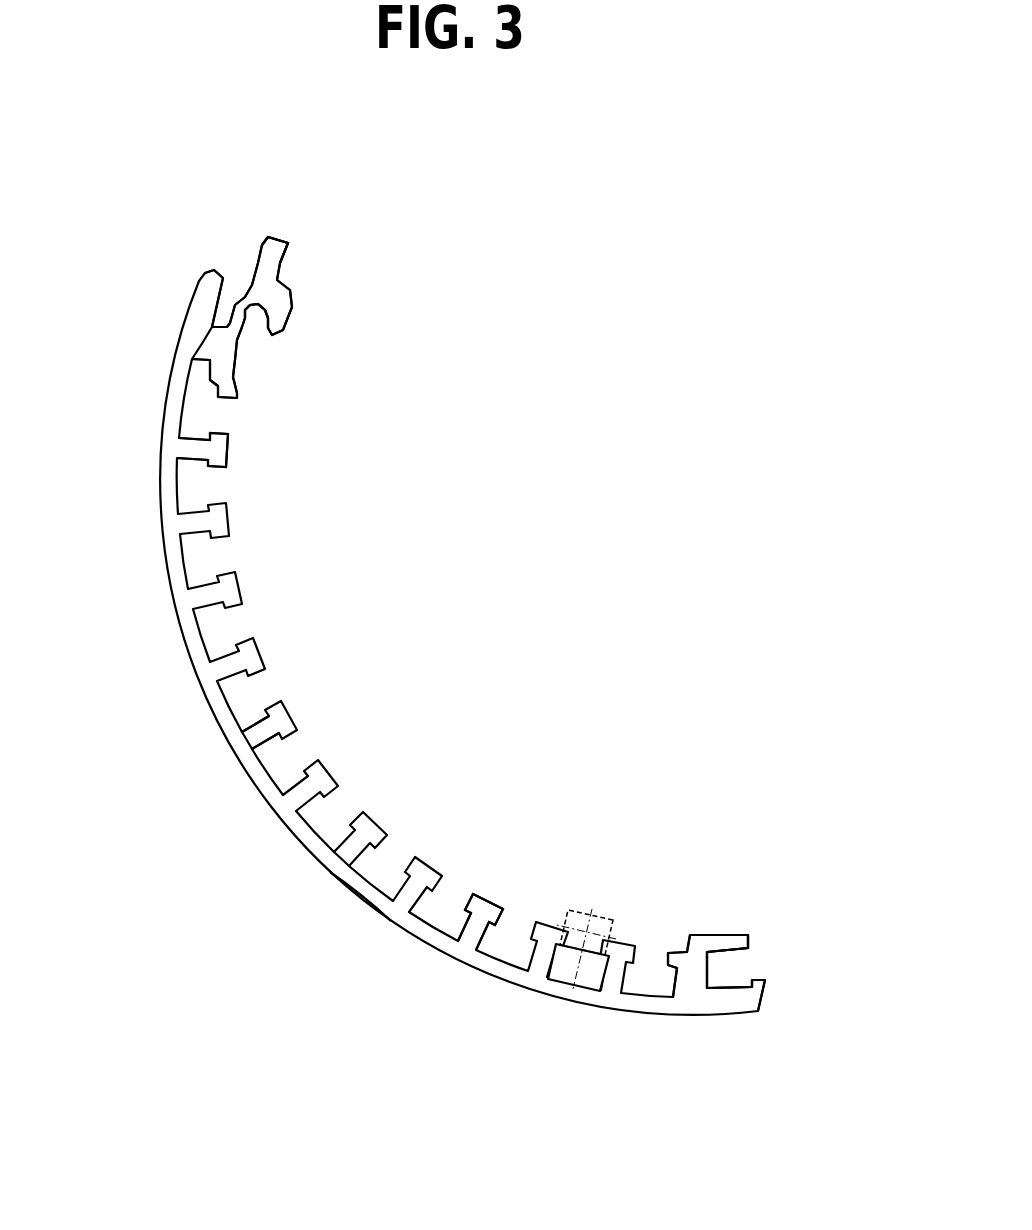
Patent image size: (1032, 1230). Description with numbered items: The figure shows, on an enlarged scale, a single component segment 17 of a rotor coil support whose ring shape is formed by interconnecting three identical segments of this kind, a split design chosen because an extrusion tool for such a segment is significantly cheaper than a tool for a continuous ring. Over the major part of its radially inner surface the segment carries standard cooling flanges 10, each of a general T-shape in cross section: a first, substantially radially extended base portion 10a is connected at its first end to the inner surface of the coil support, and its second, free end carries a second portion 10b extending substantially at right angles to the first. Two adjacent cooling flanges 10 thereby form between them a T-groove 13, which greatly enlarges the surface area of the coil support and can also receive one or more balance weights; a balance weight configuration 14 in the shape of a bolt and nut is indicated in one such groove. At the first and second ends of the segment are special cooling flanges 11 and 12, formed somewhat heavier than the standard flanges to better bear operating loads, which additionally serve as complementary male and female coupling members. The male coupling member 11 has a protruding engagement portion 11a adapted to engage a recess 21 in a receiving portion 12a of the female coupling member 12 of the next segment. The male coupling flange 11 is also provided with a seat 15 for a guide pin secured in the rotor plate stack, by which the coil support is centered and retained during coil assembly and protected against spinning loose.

The standard cooling flange 10 is at (384, 821).
The base portion 10a is at (473, 920).
The second portion 10b is at (220, 446).
The special cooling flange 11 is at (222, 342).
The protruding engagement portion 11a is at (276, 254).
The special cooling flange 12 is at (691, 988).
The receiving portion 12a is at (720, 943).
The T-groove 13 is at (245, 695).
The balance weight configuration 14 is at (570, 970).
The seat 15 is at (258, 312).
The component segment 17 is at (352, 883).
The recess 21 is at (727, 967).